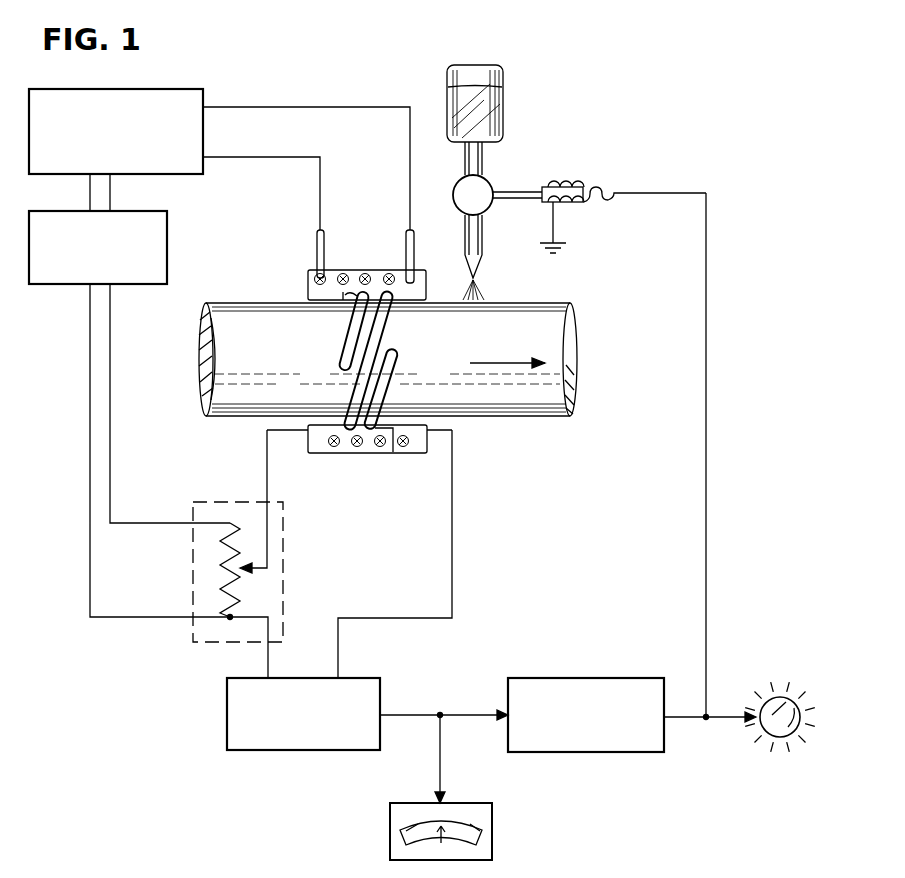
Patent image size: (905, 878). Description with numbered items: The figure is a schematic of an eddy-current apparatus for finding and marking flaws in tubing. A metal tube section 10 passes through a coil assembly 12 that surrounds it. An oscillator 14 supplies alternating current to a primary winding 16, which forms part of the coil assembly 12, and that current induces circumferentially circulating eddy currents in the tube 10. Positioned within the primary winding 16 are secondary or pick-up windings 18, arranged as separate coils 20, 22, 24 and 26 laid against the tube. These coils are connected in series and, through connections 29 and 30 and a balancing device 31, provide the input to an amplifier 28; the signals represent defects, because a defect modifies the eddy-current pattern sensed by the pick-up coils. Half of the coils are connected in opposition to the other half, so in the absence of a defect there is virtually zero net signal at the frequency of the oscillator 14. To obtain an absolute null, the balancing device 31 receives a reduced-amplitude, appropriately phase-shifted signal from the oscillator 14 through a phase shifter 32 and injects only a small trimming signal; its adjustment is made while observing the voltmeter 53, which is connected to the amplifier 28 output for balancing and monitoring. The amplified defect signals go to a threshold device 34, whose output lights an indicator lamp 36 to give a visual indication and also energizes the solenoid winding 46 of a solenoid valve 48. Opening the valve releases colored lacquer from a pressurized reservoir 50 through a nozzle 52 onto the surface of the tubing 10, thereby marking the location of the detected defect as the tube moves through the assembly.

The metal tube section 10 is at (222, 300).
The coil assembly 12 is at (308, 278).
The oscillator 14 is at (203, 172).
The primary winding 16 is at (406, 252).
The secondary or pick-up windings 18 is at (314, 345).
The pick-up coil 20 is at (343, 298).
The pick-up coil 22 is at (343, 362).
The pick-up coil 24 is at (392, 326).
The pick-up coil 26 is at (397, 360).
The amplifier 28 is at (227, 700).
The connection 29 is at (268, 617).
The connection 30 is at (371, 618).
The balancing device 31 is at (201, 500).
The phase shifter 32 is at (56, 285).
The threshold device 34 is at (574, 678).
The indicator lamp 36 is at (778, 737).
The solenoid winding 46 is at (578, 187).
The solenoid valve 48 is at (491, 180).
The pressurized reservoir 50 is at (503, 102).
The nozzle 52 is at (480, 262).
The voltmeter 53 is at (492, 832).